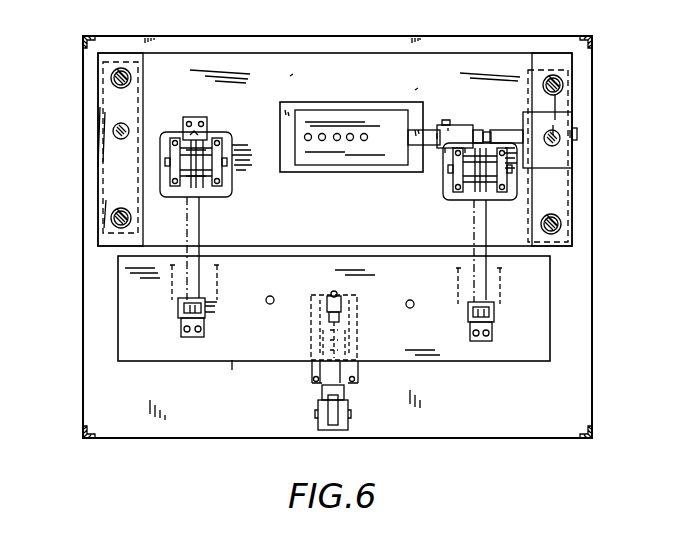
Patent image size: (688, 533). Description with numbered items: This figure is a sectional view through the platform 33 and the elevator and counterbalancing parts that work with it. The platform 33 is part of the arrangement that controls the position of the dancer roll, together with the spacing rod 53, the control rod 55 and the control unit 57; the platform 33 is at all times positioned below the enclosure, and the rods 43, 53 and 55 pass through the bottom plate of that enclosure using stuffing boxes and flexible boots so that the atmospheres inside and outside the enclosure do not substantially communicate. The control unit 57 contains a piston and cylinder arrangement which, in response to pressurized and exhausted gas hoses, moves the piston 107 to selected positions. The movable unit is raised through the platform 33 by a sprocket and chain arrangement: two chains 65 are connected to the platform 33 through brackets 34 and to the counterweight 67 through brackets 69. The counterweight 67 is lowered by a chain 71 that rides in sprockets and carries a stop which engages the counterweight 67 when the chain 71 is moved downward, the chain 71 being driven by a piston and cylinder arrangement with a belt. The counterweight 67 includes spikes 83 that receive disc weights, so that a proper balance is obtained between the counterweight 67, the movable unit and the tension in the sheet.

The platform 33 is at (262, 62).
The rods 43 is at (111, 78).
The spacing rod 53 is at (113, 128).
The control rod 55 is at (560, 136).
The control unit 57 is at (338, 122).
The piston 107 is at (443, 130).
The brackets 34 is at (186, 122).
The chains 65 is at (210, 230).
The counterweight 67 is at (263, 360).
The brackets 69 is at (194, 340).
The chain 71 is at (343, 330).
The spikes 83 is at (273, 297).